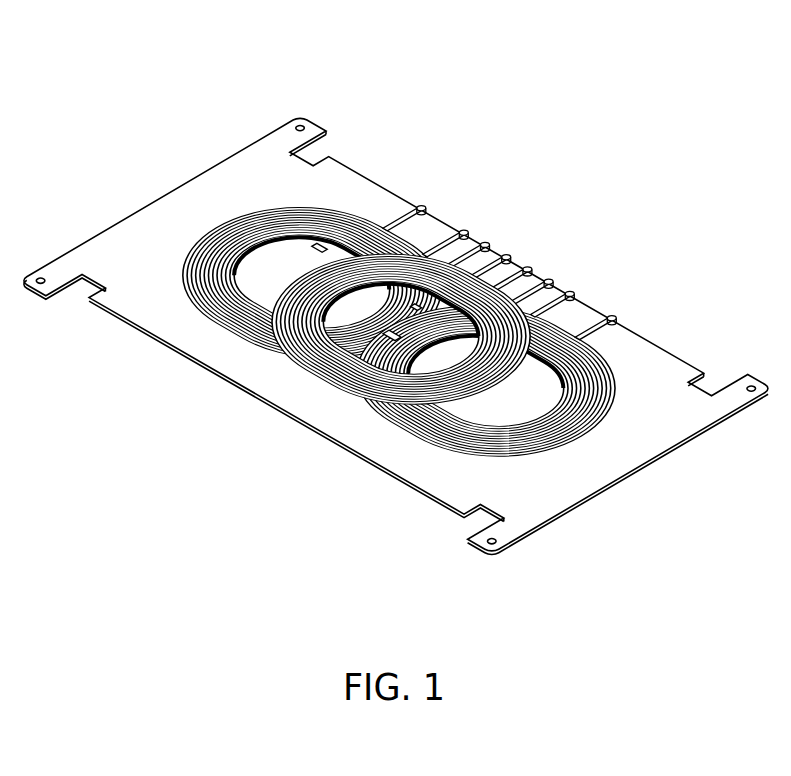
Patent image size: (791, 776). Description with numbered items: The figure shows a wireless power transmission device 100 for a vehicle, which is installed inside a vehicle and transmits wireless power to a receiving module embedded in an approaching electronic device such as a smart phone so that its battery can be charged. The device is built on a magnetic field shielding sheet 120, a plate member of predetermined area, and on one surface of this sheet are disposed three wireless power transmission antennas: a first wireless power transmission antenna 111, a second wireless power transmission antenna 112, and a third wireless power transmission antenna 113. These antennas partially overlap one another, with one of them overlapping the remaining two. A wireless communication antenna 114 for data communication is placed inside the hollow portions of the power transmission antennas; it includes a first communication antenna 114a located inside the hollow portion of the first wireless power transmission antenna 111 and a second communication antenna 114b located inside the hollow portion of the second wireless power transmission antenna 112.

The wireless power transmission device 100 is at (396, 281).
The first wireless power transmission antenna 111 is at (373, 215).
The second wireless power transmission antenna 112 is at (576, 318).
The third wireless power transmission antenna 113 is at (478, 265).
The wireless communication antenna 114 is at (268, 509).
The first communication antenna 114a is at (255, 318).
The second communication antenna 114b is at (420, 410).
The magnetic field shielding sheet 120 is at (655, 470).